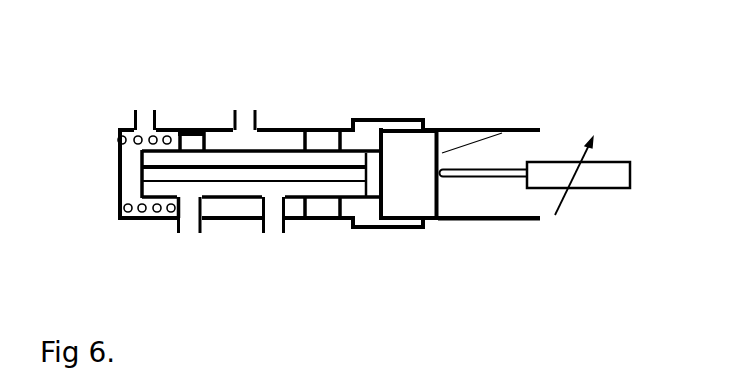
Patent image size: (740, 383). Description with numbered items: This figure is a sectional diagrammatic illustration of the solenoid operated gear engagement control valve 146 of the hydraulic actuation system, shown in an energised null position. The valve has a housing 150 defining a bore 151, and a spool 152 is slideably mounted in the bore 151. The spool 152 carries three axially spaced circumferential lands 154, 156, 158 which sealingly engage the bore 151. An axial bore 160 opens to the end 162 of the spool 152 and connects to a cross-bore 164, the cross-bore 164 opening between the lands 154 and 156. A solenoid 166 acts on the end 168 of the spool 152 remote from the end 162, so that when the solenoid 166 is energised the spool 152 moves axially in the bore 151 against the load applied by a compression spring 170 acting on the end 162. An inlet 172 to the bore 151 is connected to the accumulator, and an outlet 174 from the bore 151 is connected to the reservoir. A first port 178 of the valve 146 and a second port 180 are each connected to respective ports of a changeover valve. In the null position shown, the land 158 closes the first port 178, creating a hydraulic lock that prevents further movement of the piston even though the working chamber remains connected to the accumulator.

The gear engagement control valve 146 is at (491, 268).
The housing 150 is at (540, 130).
The bore 151 is at (127, 200).
The spool 152 is at (442, 153).
The land 154 is at (417, 200).
The land 156 is at (316, 143).
The land 158 is at (202, 218).
The axial bore 160 is at (155, 177).
The end of spool 162 is at (145, 181).
The cross-bore 164 is at (363, 157).
The solenoid 166 is at (582, 178).
The end of spool 168 is at (445, 200).
The compression spring 170 is at (135, 132).
The inlet 172 is at (245, 115).
The outlet 174 is at (153, 108).
The first port 178 is at (185, 233).
The second port 180 is at (270, 232).